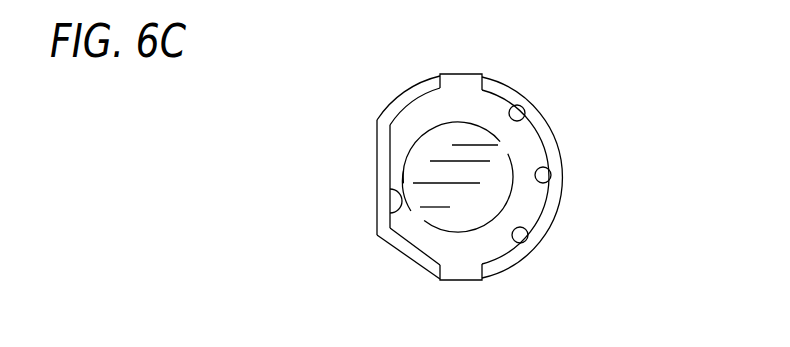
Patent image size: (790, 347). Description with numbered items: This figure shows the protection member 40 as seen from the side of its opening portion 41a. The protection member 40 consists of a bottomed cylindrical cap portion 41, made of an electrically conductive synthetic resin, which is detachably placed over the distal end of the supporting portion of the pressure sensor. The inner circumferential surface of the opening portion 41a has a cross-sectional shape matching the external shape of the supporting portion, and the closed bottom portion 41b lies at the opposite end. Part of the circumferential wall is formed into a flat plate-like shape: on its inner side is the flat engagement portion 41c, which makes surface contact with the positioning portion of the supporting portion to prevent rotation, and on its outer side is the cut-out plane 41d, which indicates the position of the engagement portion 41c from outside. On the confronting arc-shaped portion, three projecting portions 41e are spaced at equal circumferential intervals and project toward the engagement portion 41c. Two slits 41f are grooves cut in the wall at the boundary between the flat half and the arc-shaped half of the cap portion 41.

The protection member 40 is at (380, 97).
The cap portion 41 is at (557, 144).
The opening portion 41a is at (394, 248).
The bottom portion 41b is at (465, 197).
The engagement portion 41c is at (385, 214).
The cut-out plane 41d is at (377, 165).
The projecting portions 41e is at (518, 112).
The slits 41f is at (449, 74).